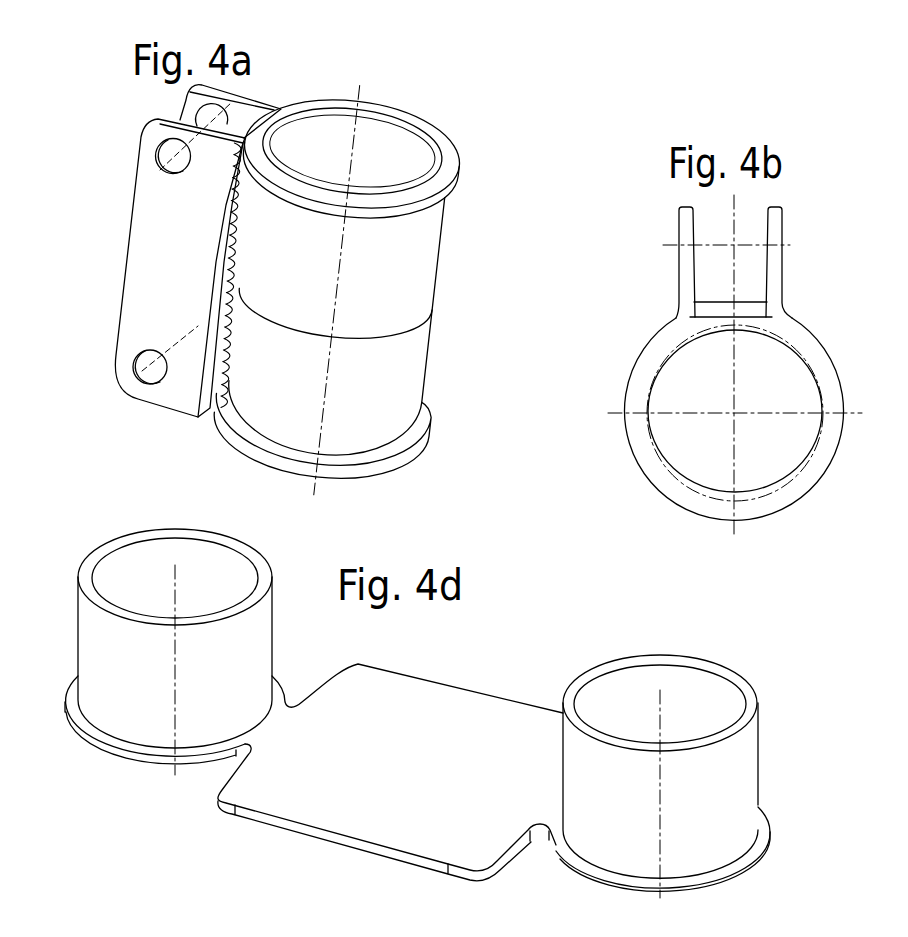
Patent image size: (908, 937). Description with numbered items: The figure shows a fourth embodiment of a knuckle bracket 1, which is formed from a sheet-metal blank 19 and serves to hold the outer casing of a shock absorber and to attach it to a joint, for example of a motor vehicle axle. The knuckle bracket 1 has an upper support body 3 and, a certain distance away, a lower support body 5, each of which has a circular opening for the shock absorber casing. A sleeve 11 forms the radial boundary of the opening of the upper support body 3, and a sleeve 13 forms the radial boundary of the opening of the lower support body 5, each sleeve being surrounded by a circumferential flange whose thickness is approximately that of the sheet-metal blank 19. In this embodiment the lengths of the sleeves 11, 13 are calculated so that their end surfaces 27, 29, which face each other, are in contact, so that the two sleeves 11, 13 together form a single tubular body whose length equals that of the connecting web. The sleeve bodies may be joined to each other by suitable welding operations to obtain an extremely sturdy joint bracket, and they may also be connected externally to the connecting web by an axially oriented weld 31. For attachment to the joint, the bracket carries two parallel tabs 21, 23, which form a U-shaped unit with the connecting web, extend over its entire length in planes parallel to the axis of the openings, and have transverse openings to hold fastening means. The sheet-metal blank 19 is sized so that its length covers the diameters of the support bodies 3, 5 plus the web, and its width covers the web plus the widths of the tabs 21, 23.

In FIG. 4a, the knuckle bracket 1 is at (321, 294).
In FIG. 4a, the upper support body 3 is at (470, 176).
In FIG. 4a, the lower support body 5 is at (445, 410).
In FIG. 4a, the sleeve 11 is at (433, 260).
In FIG. 4d, the sleeve 11 is at (193, 639).
In FIG. 4a, the sleeve 13 is at (413, 353).
In FIG. 4d, the sleeve 13 is at (684, 758).
In FIG. 4d, the sheet-metal blank 19 is at (470, 669).
In FIG. 4b, the tab 21 is at (685, 230).
In FIG. 4b, the tab 23 is at (775, 224).
In FIG. 4d, the end surface 27 is at (232, 548).
In FIG. 4d, the end surface 29 is at (718, 667).
In FIG. 4a, the axially oriented weld 31 is at (200, 412).